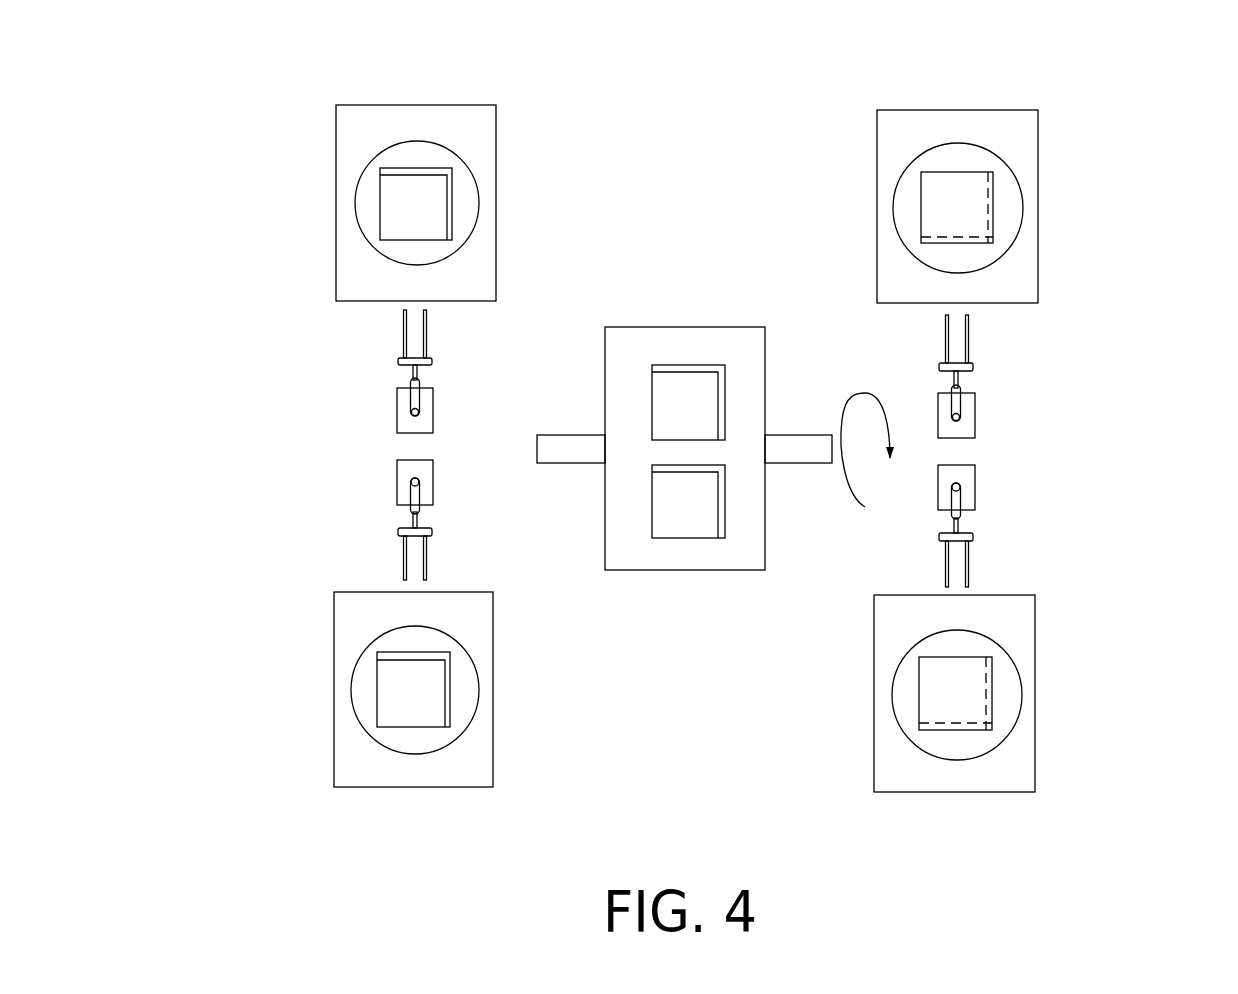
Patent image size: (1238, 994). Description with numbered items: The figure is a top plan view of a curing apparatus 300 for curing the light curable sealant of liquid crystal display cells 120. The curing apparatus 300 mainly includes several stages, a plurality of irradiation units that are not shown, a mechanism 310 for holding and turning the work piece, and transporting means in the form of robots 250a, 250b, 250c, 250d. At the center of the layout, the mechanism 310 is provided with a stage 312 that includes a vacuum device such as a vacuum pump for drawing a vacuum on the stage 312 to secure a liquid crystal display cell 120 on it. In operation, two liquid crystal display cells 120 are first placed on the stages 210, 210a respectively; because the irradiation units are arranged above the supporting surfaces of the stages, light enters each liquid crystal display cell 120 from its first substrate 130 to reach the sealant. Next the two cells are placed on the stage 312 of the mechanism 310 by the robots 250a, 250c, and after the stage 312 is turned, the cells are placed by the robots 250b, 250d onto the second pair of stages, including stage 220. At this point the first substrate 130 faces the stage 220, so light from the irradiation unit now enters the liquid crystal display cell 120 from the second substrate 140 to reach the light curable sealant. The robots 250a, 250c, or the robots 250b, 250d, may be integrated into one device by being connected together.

The curing apparatus 300 is at (165, 120).
The liquid crystal display cell 120 is at (380, 223).
The first substrate 130 is at (393, 198).
The second substrate 140 is at (452, 205).
The stage 210 is at (384, 144).
The stage 210a is at (383, 632).
The stage 220 is at (988, 150).
The robot 250a is at (398, 414).
The robot 250b is at (972, 418).
The robot 250c is at (398, 480).
The robot 250d is at (968, 487).
The mechanism for holding and turning the work piece 310 is at (688, 327).
The stage 312 is at (728, 560).